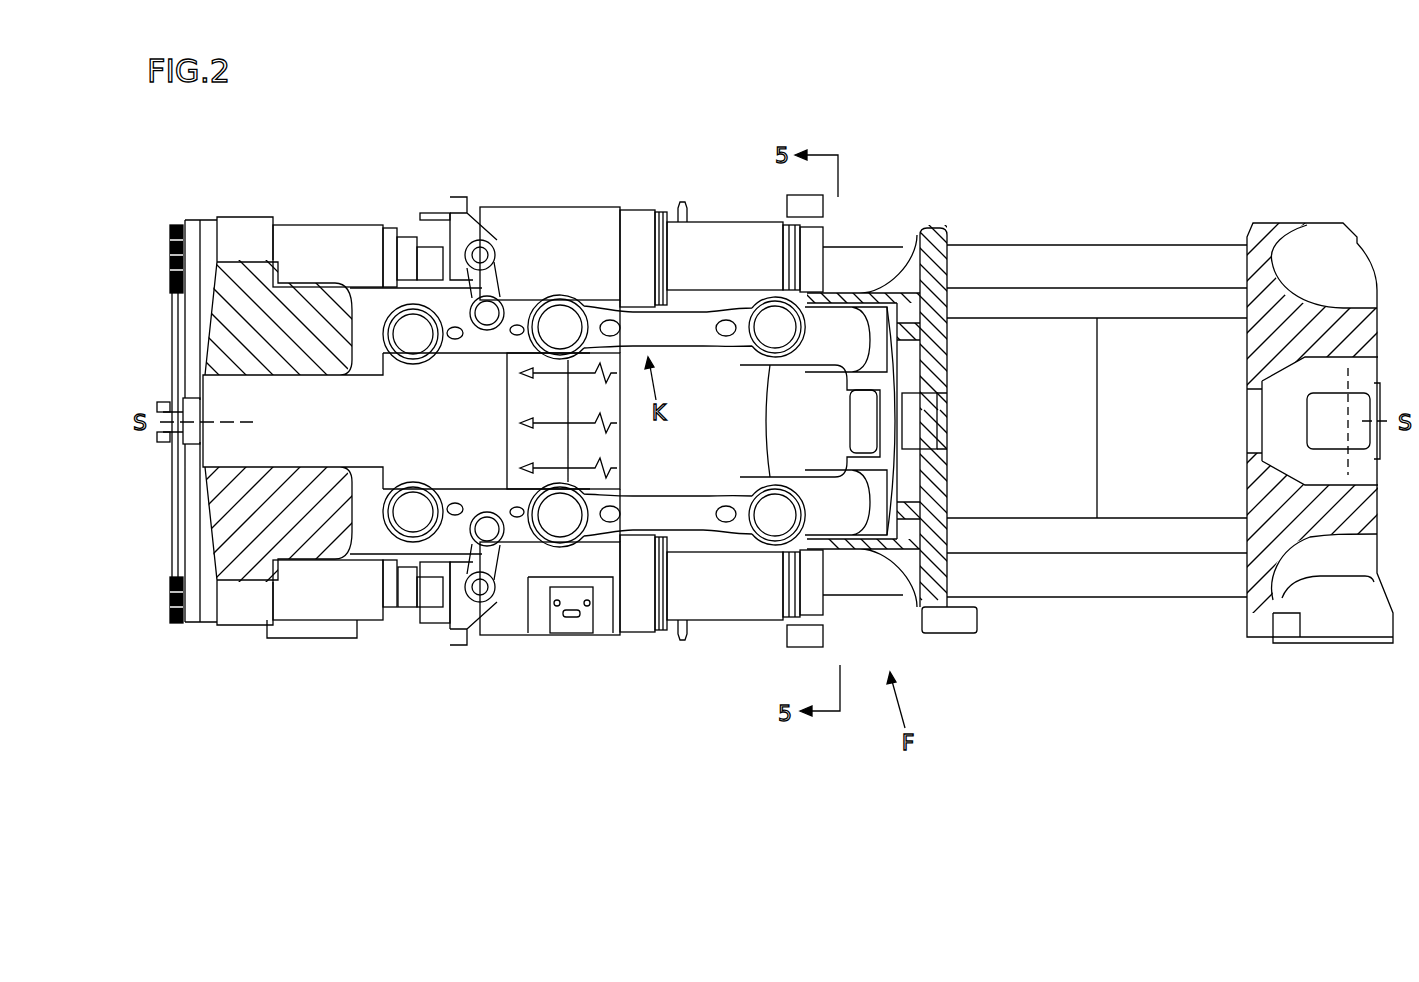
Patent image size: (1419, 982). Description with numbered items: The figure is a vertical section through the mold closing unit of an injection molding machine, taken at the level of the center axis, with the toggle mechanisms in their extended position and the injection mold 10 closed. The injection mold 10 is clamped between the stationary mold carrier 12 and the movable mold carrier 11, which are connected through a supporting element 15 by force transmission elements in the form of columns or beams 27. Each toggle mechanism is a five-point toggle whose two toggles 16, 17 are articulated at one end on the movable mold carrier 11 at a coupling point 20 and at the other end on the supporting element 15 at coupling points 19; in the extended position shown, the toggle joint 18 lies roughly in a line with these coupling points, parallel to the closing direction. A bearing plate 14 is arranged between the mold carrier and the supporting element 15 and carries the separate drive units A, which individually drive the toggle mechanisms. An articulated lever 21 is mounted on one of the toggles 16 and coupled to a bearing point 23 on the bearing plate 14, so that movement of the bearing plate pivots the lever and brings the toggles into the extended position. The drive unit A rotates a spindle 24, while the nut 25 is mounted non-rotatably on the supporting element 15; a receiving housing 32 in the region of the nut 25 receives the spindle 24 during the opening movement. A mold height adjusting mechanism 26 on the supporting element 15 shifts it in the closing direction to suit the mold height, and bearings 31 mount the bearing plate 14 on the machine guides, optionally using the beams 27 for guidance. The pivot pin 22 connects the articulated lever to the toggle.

The injection mold 10 is at (1112, 325).
The movable mold carrier 11 is at (930, 235).
The stationary mold carrier 12 is at (1305, 228).
The bearing plate 14 is at (522, 418).
The supporting element 15 is at (247, 277).
The toggle 16 is at (453, 350).
The toggle 17 is at (682, 340).
The toggle joint 18 is at (567, 313).
The coupling point 19 is at (405, 350).
The coupling point 20 is at (783, 503).
The articulated lever 21 is at (500, 242).
The pivot pin 22 is at (500, 334).
The bearing point 23 is at (505, 355).
The spindle 24 is at (428, 245).
The nut 25 is at (425, 250).
The mold height adjusting mechanism 26 is at (169, 209).
The beam 27 is at (1085, 247).
The bearing 31 is at (570, 633).
The receiving housing 32 is at (333, 243).
The drive unit A is at (708, 204).